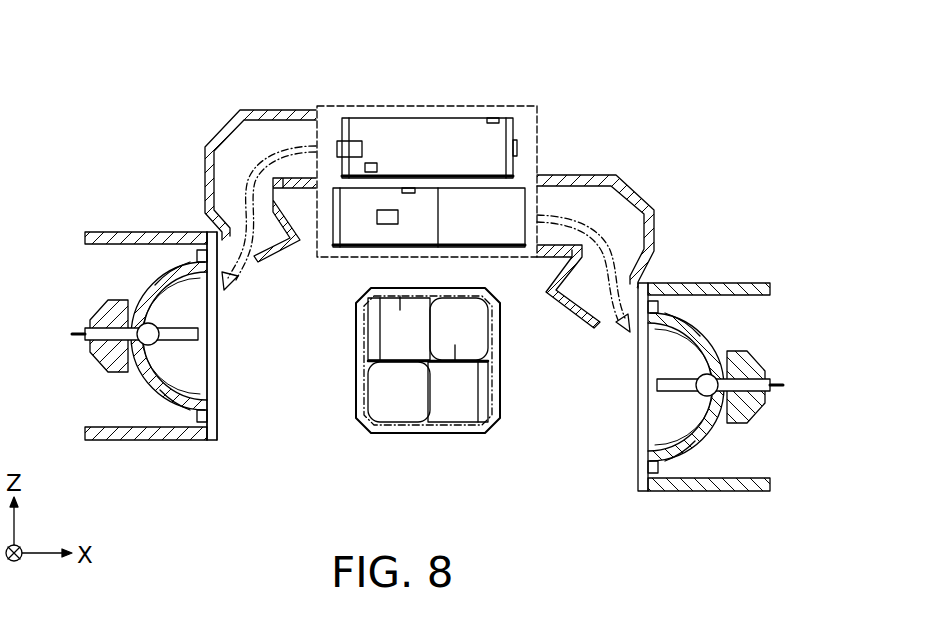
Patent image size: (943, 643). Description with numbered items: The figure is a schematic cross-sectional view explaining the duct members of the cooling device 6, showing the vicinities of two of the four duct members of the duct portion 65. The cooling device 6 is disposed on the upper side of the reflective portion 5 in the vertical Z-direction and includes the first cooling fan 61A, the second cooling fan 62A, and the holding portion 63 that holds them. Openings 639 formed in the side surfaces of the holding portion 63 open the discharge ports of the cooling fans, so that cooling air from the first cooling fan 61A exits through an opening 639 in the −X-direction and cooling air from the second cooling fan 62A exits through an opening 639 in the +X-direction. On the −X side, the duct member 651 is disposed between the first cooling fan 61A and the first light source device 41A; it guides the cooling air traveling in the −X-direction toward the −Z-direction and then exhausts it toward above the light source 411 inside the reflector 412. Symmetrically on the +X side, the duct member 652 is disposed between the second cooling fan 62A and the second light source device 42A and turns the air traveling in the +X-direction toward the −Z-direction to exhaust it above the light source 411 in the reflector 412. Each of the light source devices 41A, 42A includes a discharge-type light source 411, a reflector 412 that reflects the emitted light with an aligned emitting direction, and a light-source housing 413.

The cooling device 6 is at (565, 78).
The holding portion 63 is at (462, 105).
The first cooling fan 61A is at (377, 128).
The second cooling fan 62A is at (513, 200).
The duct portion 65 is at (483, 173).
The duct member 651 is at (226, 122).
The duct member 652 is at (642, 186).
The opening 639 is at (324, 118).
The first light source device 41A is at (100, 202).
The second light source device 42A is at (758, 263).
The light-source housing 413 is at (165, 234).
The reflector 412 is at (176, 262).
The light source 411 is at (150, 346).
The reflective portion 5 is at (360, 443).